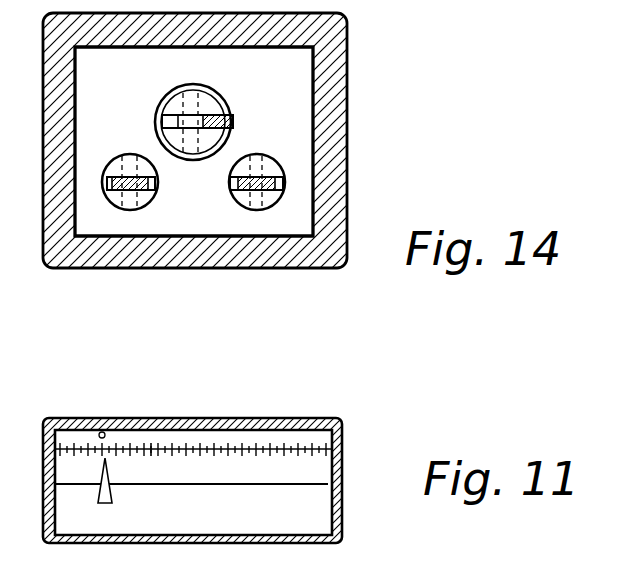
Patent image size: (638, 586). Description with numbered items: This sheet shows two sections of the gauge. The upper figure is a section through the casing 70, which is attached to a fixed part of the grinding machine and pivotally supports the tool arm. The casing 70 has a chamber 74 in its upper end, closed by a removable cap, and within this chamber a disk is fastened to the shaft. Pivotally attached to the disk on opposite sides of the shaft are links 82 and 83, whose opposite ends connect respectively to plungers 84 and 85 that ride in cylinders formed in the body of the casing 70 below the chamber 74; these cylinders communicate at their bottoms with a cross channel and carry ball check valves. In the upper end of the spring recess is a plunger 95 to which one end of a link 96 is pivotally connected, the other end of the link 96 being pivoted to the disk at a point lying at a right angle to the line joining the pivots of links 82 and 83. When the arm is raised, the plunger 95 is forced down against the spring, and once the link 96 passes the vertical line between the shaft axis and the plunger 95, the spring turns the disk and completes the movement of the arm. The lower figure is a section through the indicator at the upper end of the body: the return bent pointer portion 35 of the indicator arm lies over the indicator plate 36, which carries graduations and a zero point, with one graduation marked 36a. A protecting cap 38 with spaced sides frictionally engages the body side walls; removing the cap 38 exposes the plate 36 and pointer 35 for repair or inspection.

In FIG. 14, the casing 70 is at (340, 140).
In FIG. 14, the chamber 74 is at (303, 93).
In FIG. 14, the plunger 95 is at (223, 100).
In FIG. 14, the link 96 is at (233, 121).
In FIG. 14, the plunger 84 is at (120, 210).
In FIG. 14, the link 82 is at (153, 192).
In FIG. 14, the plunger 85 is at (247, 210).
In FIG. 14, the link 83 is at (270, 208).
In FIG. 11, the protecting cap 38 is at (342, 425).
In FIG. 11, the indicator plate 36 is at (240, 440).
In FIG. 11, the scale graduation 36a is at (155, 455).
In FIG. 11, the pointer portion 35 is at (108, 478).